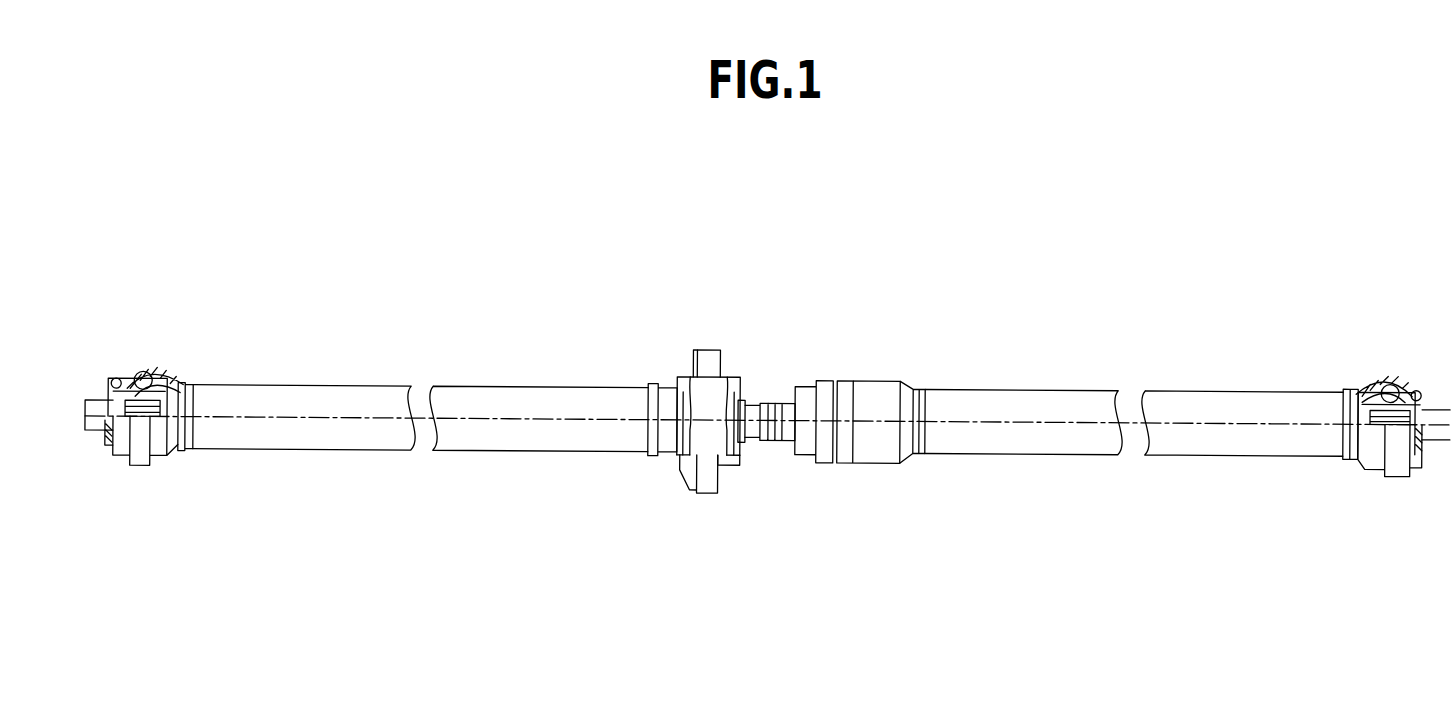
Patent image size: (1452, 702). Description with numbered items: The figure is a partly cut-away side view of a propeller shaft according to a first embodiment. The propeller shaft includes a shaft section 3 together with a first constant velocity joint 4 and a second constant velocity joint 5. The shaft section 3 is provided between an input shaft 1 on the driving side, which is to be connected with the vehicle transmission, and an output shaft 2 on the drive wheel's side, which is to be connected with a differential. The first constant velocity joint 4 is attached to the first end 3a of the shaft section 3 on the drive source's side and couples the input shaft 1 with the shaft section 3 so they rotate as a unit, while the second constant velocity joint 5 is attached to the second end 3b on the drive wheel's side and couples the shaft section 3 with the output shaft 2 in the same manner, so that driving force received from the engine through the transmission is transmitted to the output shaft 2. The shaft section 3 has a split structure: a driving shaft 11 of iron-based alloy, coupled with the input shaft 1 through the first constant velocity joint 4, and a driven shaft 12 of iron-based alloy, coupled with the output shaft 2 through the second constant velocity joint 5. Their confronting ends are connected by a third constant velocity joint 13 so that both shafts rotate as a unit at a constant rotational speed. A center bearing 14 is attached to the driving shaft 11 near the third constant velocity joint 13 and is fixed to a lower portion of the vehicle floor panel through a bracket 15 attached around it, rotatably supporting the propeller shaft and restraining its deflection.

The input shaft 1 is at (91, 396).
The output shaft 2 is at (1437, 390).
The shaft section 3 is at (590, 352).
The first end 3a is at (229, 392).
The second end 3b is at (1283, 392).
The first constant velocity joint 4 is at (174, 360).
The second constant velocity joint 5 is at (1362, 370).
The driving shaft 11 is at (462, 395).
The driven shaft 12 is at (1167, 392).
The third constant velocity joint 13 is at (845, 370).
The center bearing 14 is at (730, 460).
The bracket 15 is at (707, 487).